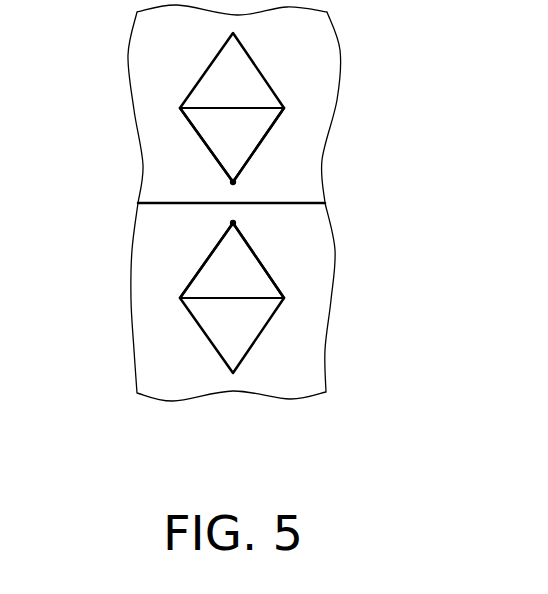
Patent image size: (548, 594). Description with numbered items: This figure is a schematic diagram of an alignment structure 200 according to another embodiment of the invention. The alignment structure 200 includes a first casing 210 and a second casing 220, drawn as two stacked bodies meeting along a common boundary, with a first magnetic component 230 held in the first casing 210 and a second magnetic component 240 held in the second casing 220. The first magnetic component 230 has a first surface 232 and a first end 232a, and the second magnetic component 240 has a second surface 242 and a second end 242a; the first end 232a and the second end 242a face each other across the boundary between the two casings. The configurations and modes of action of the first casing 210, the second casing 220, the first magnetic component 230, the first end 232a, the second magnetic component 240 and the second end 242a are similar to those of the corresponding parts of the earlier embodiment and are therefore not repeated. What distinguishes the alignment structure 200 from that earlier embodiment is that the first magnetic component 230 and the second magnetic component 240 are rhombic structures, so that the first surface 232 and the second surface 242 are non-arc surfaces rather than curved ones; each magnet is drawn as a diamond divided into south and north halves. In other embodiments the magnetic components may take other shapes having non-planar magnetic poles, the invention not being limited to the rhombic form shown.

The alignment structure 200 is at (294, 237).
The first casing 210 is at (313, 370).
The second casing 220 is at (318, 37).
The first magnetic component 230 is at (210, 323).
The first surface 232 is at (250, 252).
The first end 232a is at (233, 223).
The second magnetic component 240 is at (206, 90).
The second surface 242 is at (238, 172).
The second end 242a is at (233, 182).